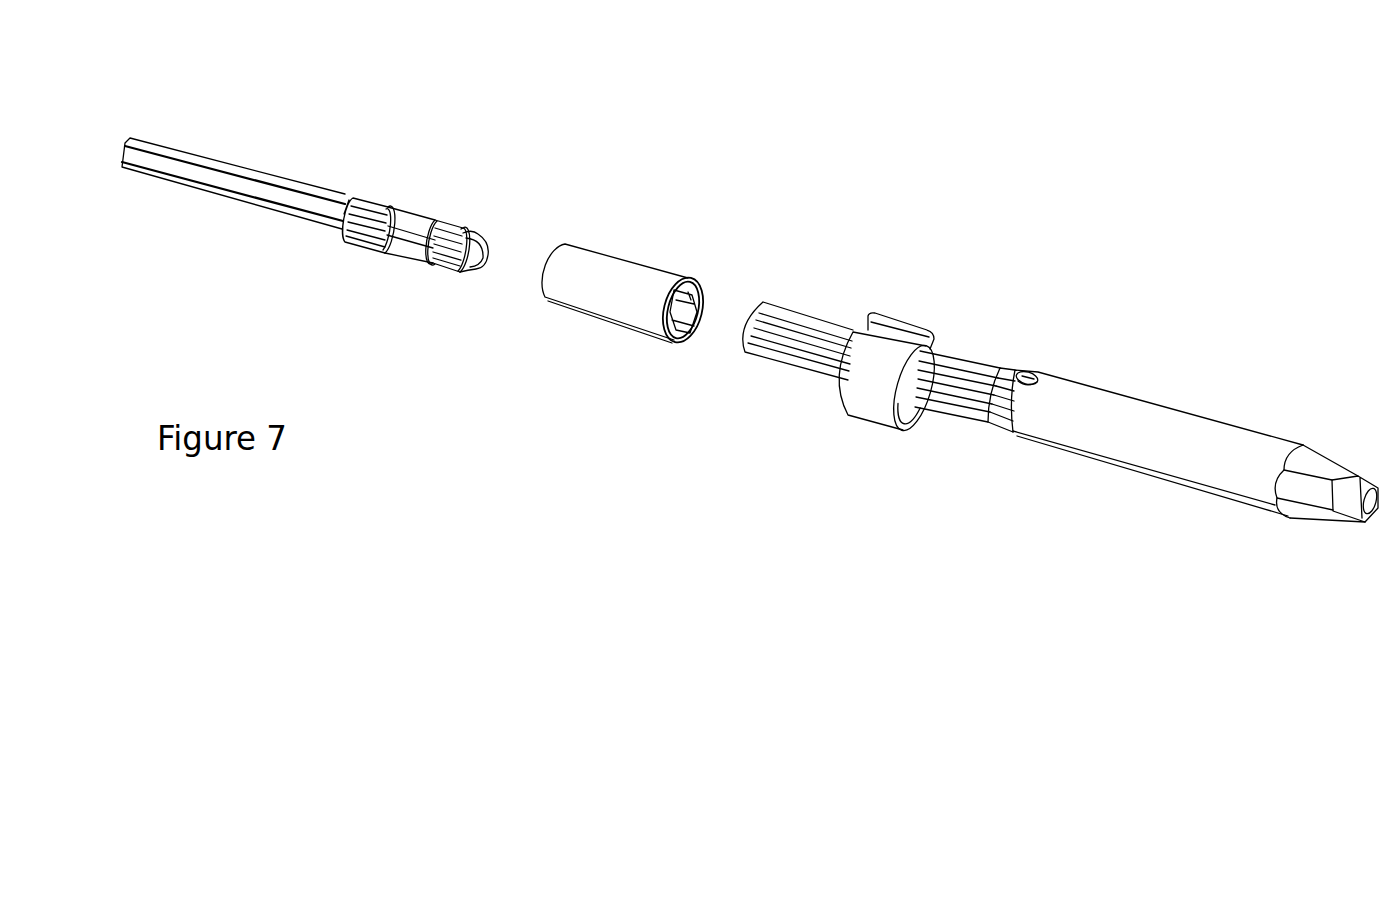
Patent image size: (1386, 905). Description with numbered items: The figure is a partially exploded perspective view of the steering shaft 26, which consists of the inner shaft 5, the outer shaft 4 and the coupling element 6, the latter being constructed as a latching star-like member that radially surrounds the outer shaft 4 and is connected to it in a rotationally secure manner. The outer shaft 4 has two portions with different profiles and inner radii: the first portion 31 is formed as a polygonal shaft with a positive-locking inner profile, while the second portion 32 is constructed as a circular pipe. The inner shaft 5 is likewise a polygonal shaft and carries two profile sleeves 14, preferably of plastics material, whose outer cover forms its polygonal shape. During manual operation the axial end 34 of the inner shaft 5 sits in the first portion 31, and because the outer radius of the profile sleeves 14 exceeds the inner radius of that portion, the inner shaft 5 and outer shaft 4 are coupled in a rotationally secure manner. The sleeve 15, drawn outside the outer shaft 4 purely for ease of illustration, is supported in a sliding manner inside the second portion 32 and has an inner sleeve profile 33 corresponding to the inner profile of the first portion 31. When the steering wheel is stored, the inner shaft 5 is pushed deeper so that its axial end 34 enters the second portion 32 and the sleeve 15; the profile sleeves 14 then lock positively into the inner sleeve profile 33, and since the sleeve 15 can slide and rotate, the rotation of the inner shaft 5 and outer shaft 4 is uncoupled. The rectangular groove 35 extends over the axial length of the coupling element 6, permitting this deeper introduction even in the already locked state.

The outer shaft 4 is at (1122, 416).
The inner shaft 5 is at (288, 205).
The coupling element 6 is at (920, 323).
The profile sleeves 14 is at (438, 260).
The sleeve 15 is at (610, 273).
The steering shaft 26 is at (925, 125).
The first portion 31 is at (815, 348).
The second portion 32 is at (1162, 455).
The inner sleeve profile 33 is at (680, 312).
The axial end 34 is at (415, 230).
The rectangular groove 35 is at (898, 338).